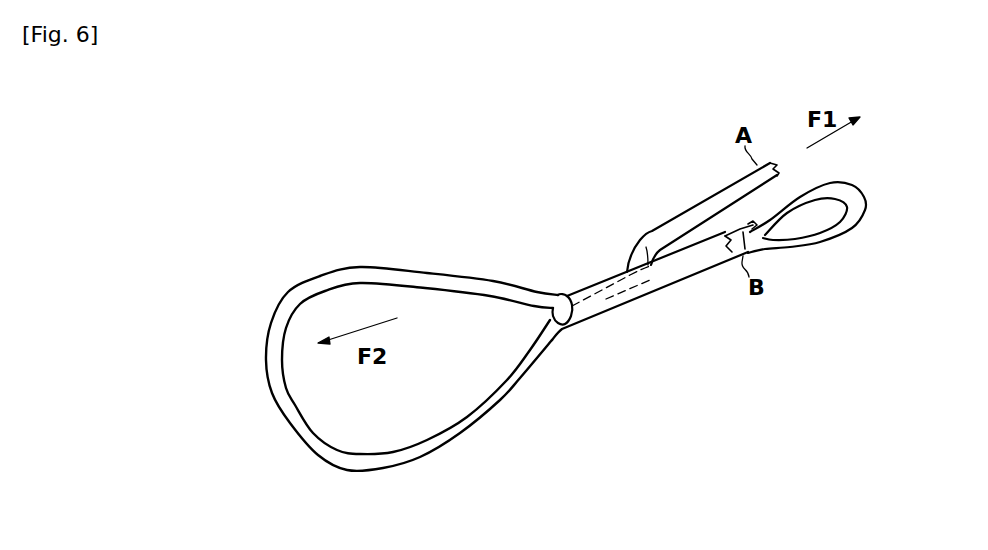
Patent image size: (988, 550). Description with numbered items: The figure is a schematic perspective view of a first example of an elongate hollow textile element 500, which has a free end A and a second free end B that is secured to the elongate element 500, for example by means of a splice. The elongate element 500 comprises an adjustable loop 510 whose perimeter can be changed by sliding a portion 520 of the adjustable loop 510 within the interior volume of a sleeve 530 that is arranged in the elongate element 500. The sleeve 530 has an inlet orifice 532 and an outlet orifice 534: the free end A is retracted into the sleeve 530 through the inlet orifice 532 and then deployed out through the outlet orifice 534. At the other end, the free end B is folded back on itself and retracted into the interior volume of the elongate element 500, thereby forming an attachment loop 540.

The elongate hollow textile element 500 is at (512, 336).
The adjustable loop 510 is at (374, 464).
The portion of the adjustable loop 520 is at (585, 307).
The sleeve 530 is at (641, 282).
The inlet orifice 532 is at (558, 294).
The outlet orifice 534 is at (647, 251).
The attachment loop 540 is at (858, 186).